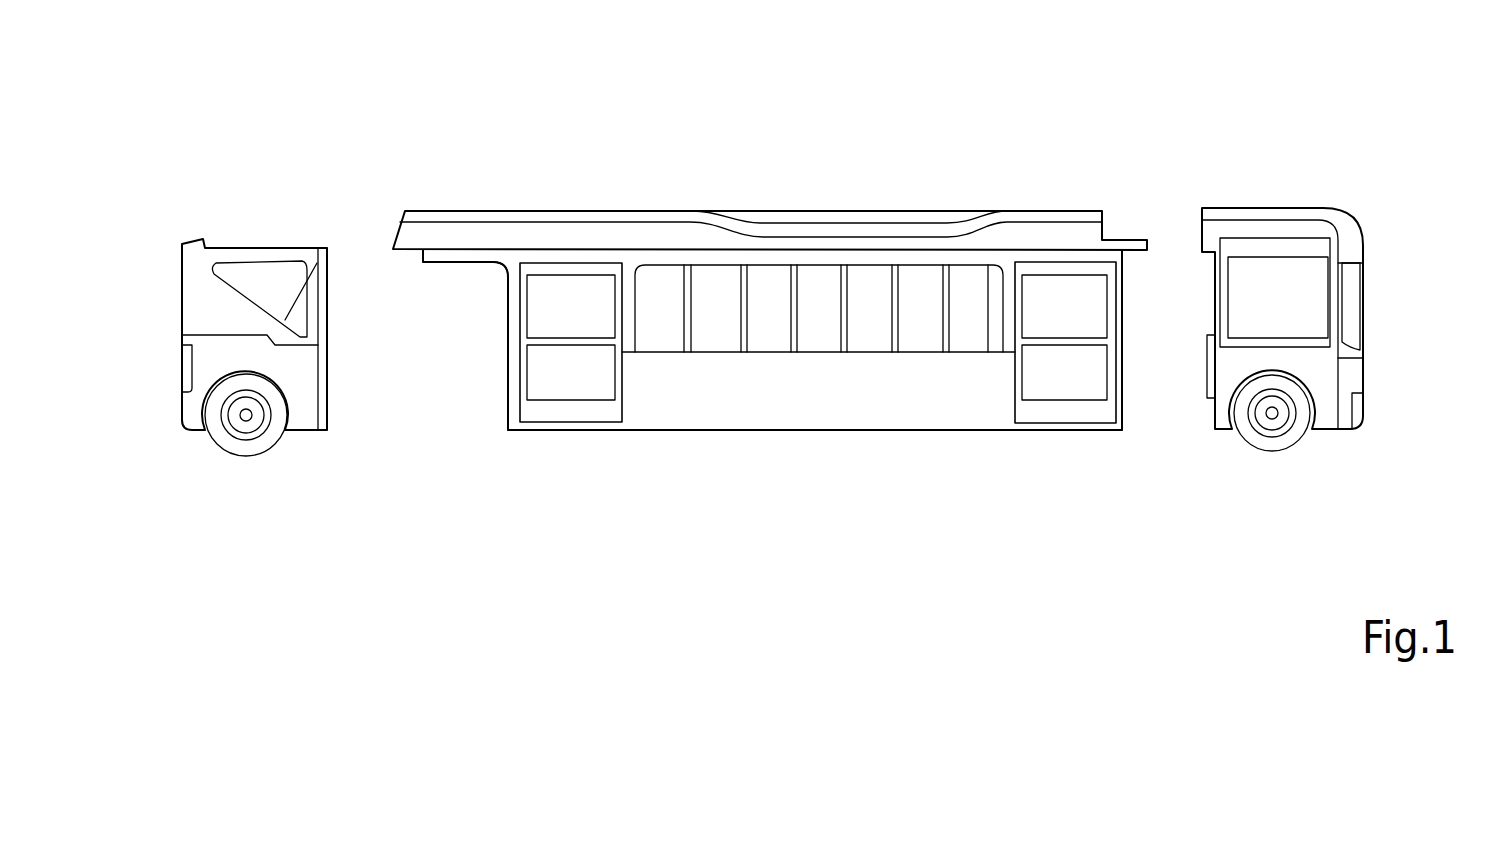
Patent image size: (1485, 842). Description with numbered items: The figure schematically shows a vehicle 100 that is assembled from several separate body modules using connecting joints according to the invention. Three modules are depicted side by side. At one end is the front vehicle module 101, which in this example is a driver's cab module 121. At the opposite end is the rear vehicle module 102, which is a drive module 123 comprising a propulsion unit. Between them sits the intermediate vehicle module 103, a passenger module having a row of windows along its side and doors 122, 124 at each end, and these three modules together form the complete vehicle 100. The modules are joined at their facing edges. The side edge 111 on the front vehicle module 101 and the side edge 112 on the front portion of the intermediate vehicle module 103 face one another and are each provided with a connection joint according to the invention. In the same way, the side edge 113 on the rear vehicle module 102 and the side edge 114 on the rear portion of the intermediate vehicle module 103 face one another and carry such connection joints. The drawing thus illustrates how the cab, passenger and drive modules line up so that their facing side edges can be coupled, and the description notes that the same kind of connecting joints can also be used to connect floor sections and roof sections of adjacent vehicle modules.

The vehicle 100 is at (919, 104).
The front vehicle module 101 is at (1283, 208).
The rear vehicle module 102 is at (242, 248).
The intermediate vehicle module 103 is at (737, 208).
The side edge of front vehicle module 111 is at (1208, 372).
The side edge of front portion of intermediate vehicle module 112 is at (1122, 355).
The side edge of rear vehicle module 113 is at (328, 364).
The side edge of rear portion of intermediate vehicle module 114 is at (507, 353).
The driver's cab module 121 is at (1365, 307).
The door 122 is at (1062, 397).
The drive module 123 is at (182, 327).
The door 124 is at (565, 382).